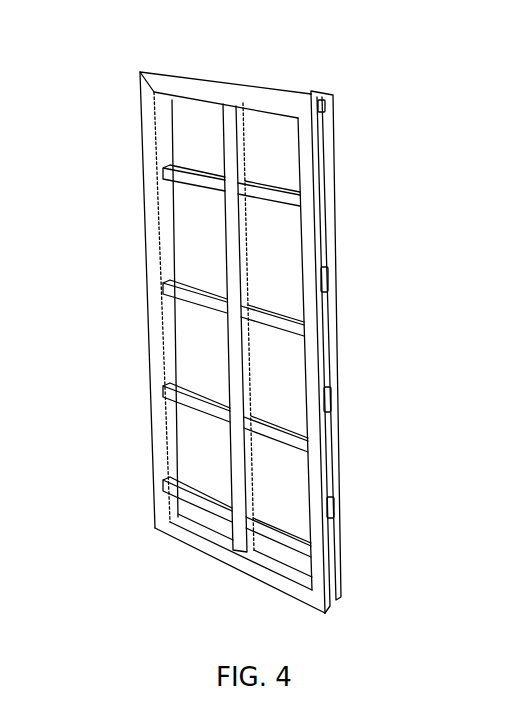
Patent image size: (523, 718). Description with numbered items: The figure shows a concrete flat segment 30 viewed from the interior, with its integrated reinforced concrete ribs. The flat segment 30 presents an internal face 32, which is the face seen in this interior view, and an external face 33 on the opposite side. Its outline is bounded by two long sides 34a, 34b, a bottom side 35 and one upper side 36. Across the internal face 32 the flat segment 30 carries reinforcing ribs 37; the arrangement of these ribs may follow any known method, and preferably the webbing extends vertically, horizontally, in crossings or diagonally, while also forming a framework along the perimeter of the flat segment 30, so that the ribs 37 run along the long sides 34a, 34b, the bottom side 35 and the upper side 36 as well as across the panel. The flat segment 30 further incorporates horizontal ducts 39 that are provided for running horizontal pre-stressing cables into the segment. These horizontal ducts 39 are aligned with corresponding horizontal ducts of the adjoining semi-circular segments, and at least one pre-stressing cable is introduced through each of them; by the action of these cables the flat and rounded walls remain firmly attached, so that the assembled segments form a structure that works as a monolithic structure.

The flat segment 30 is at (345, 161).
The internal face 32 is at (197, 422).
The external face 33 is at (337, 400).
The long side 34a is at (333, 487).
The long side 34b is at (152, 335).
The bottom side 35 is at (228, 563).
The upper side 36 is at (217, 80).
The reinforcing ribs 37 is at (192, 297).
The horizontal ducts 39 is at (172, 262).